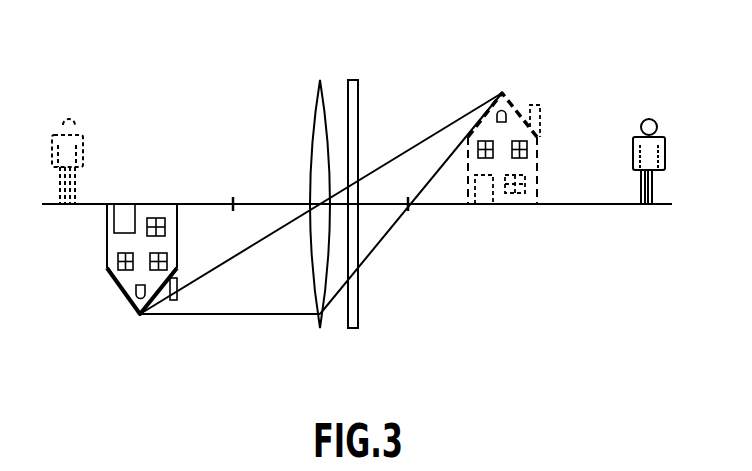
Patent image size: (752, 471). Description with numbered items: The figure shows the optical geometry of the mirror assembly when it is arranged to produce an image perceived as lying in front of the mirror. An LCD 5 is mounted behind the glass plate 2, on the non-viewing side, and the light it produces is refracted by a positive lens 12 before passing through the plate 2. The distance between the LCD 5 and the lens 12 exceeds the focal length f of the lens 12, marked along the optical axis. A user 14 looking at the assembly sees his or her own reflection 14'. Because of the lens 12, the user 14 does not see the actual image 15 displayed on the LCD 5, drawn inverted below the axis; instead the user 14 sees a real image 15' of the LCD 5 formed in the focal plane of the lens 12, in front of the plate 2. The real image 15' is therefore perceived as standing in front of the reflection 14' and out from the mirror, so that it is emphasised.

The glass plate 2 is at (353, 80).
The positive lens 12 is at (320, 80).
The user 14 is at (654, 138).
The reflection 14' is at (74, 138).
The actual image 15 is at (137, 272).
The real image 15' is at (506, 134).
The LCD 5 is at (143, 374).
The focal length f is at (320, 215).